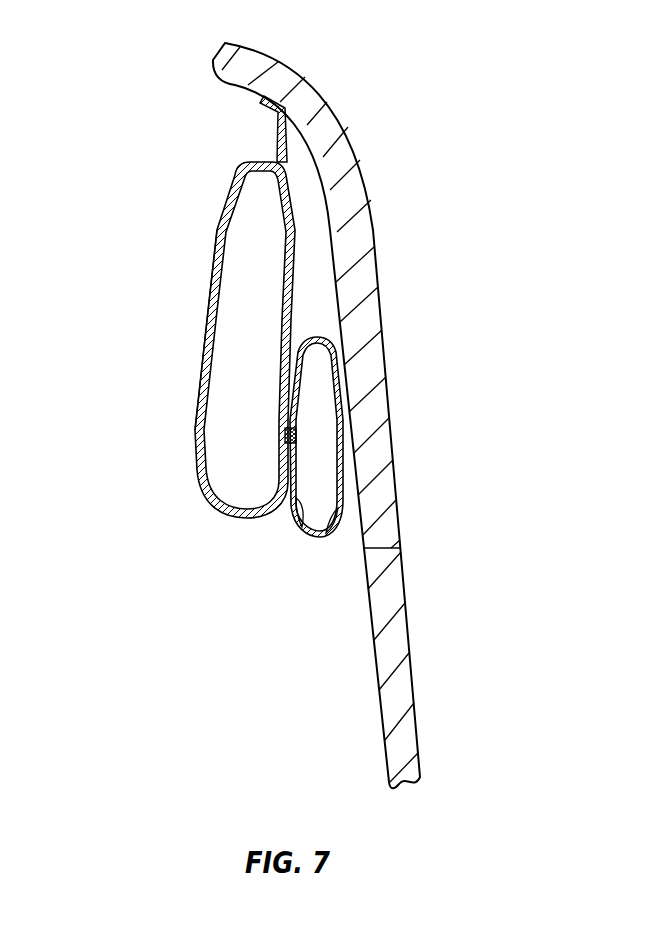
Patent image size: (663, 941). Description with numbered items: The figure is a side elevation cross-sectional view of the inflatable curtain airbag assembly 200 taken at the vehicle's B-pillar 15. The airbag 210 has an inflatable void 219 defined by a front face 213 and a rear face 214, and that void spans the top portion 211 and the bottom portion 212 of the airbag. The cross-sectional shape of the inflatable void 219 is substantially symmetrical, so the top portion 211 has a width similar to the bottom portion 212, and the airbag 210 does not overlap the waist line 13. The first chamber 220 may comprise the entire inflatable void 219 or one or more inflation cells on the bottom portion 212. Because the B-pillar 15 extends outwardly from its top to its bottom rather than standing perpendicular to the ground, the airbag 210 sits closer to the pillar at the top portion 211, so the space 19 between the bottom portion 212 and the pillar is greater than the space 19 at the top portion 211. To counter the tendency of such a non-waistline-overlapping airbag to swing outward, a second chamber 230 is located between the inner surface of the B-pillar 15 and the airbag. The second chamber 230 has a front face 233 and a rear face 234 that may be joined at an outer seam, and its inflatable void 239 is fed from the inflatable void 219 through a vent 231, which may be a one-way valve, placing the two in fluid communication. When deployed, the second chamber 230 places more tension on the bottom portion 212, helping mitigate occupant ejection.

The inflatable curtain airbag assembly 200 is at (163, 100).
The top portion 211 is at (248, 137).
The space 19 is at (313, 201).
The B-pillar 15 is at (367, 264).
The airbag 210 is at (189, 183).
The first chamber 220 is at (220, 294).
The rear face 214 is at (292, 311).
The front face 213 is at (200, 365).
The inflatable void 219 is at (252, 399).
The inflatable void 239 is at (330, 462).
The vent 231 is at (287, 440).
The bottom portion 212 is at (176, 505).
The second chamber 230 is at (273, 541).
The front face 233 is at (302, 527).
The rear face 234 is at (332, 518).
The waist line 13 is at (388, 544).